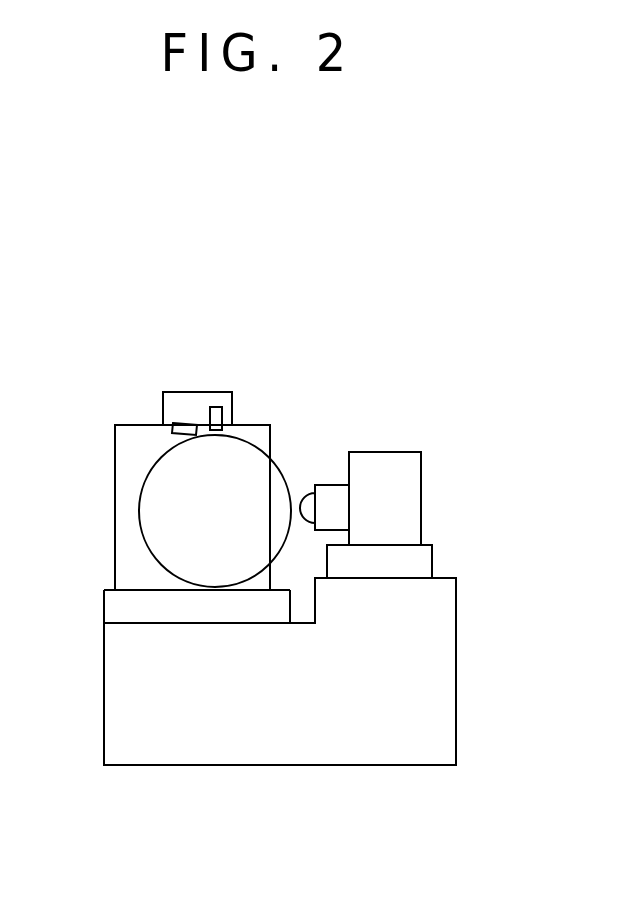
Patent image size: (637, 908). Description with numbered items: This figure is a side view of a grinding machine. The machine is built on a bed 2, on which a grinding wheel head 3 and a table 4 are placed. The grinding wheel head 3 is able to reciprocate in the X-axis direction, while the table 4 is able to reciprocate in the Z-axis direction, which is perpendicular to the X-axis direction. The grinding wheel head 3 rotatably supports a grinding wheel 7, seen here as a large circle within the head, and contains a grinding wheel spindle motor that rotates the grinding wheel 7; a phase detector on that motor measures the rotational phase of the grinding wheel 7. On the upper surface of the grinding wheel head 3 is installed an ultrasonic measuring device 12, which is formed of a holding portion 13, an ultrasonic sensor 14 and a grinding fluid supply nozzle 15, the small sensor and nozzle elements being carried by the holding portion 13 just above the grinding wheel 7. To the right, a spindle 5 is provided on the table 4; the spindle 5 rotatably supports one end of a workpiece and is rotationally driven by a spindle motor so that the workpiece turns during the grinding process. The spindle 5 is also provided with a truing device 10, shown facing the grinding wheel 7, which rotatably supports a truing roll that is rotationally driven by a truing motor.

The bed 2 is at (432, 693).
The grinding wheel head 3 is at (127, 453).
The table 4 is at (422, 563).
The spindle 5 is at (405, 509).
The grinding wheel 7 is at (153, 508).
The truing device 10 is at (340, 497).
The ultrasonic measuring device 12 is at (69, 276).
The holding portion 13 is at (184, 400).
The ultrasonic sensor 14 is at (203, 407).
The grinding fluid supply nozzle 15 is at (180, 423).